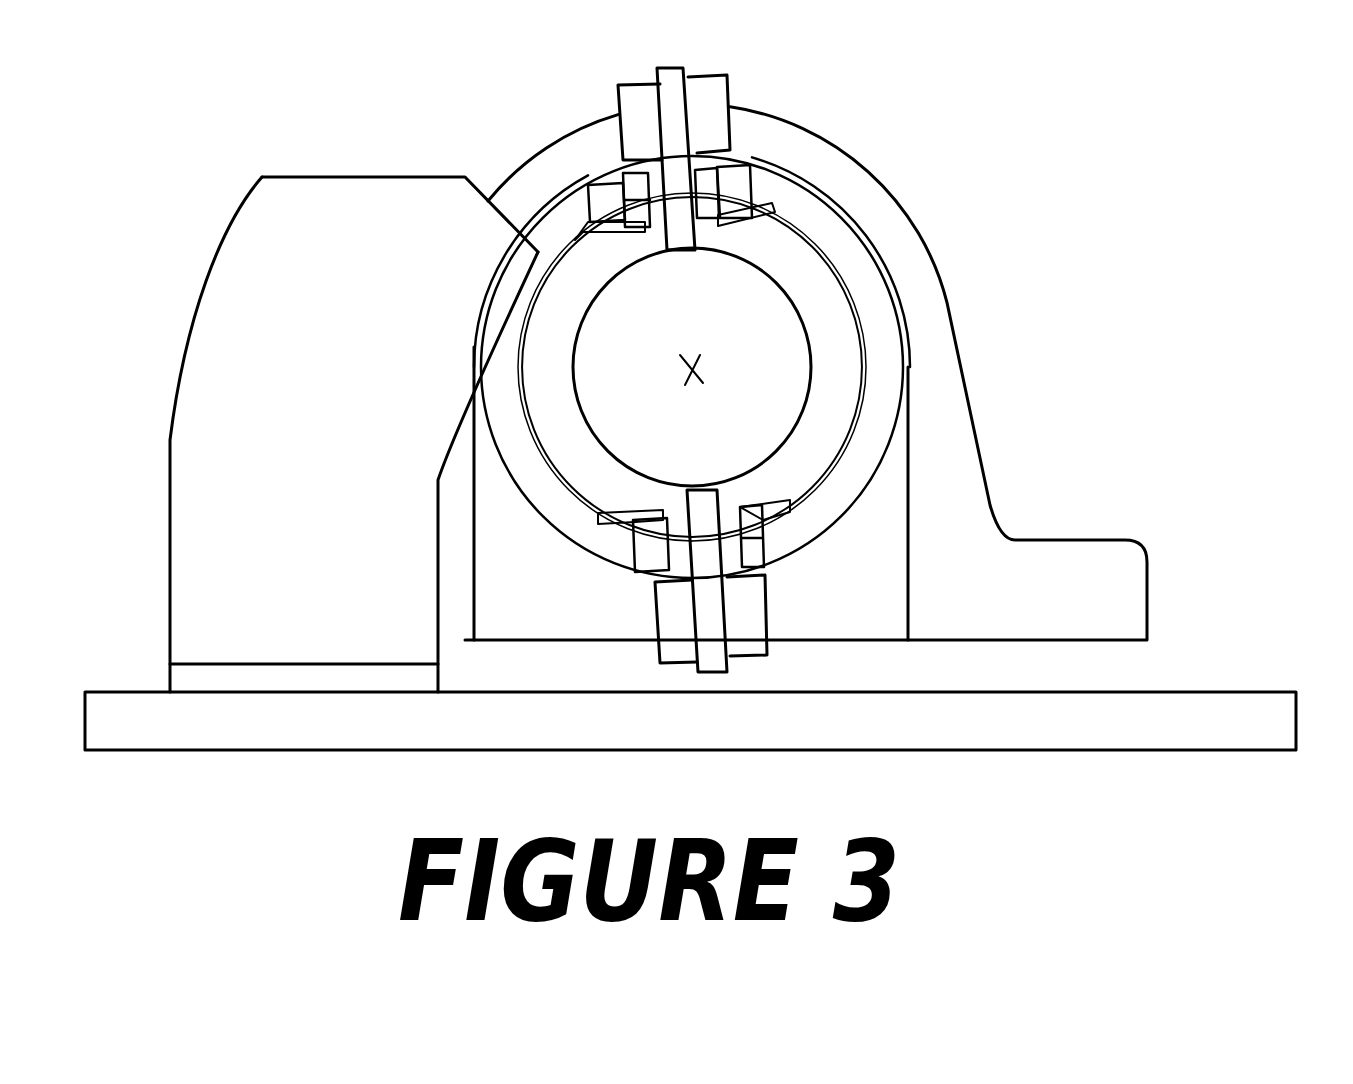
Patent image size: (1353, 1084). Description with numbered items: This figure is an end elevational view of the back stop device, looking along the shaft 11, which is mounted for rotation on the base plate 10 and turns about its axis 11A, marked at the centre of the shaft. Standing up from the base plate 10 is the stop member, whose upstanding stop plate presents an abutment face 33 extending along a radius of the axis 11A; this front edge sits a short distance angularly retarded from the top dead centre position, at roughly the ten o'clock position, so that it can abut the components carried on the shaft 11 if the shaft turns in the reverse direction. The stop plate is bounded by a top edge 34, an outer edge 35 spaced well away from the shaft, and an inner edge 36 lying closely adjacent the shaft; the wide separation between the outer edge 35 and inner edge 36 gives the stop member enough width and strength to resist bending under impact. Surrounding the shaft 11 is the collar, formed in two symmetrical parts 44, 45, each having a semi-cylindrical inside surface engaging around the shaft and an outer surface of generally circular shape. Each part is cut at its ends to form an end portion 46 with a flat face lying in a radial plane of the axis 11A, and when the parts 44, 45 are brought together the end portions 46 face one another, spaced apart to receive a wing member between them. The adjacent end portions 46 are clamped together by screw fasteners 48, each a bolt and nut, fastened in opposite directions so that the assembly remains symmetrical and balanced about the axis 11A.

The base plate 10 is at (1280, 725).
The shaft 11 is at (742, 293).
The axis 11A is at (700, 368).
The abutment face 33 is at (478, 186).
The top edge 34 is at (305, 177).
The outer edge 35 is at (172, 432).
The inner edge 36 is at (437, 515).
The collar part 44 is at (575, 460).
The collar part 45 is at (827, 447).
The end portion 46 is at (680, 560).
The screw fastener 48 is at (648, 543).